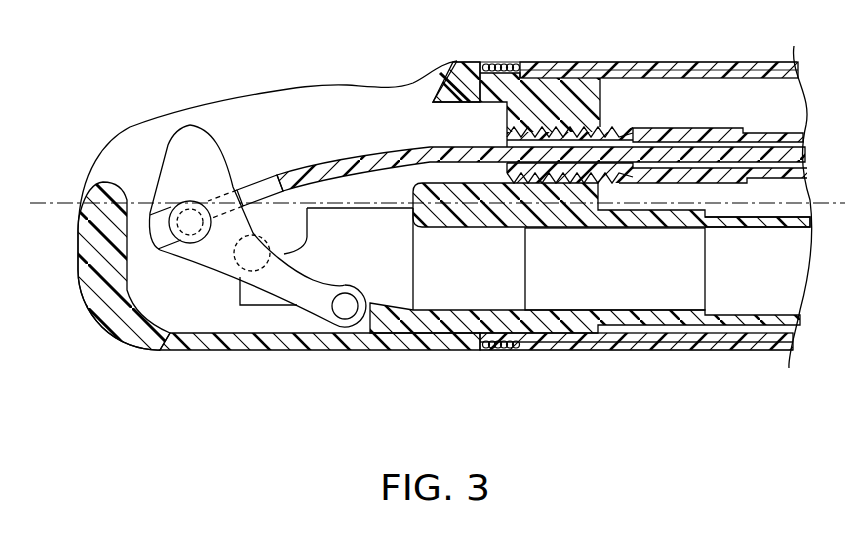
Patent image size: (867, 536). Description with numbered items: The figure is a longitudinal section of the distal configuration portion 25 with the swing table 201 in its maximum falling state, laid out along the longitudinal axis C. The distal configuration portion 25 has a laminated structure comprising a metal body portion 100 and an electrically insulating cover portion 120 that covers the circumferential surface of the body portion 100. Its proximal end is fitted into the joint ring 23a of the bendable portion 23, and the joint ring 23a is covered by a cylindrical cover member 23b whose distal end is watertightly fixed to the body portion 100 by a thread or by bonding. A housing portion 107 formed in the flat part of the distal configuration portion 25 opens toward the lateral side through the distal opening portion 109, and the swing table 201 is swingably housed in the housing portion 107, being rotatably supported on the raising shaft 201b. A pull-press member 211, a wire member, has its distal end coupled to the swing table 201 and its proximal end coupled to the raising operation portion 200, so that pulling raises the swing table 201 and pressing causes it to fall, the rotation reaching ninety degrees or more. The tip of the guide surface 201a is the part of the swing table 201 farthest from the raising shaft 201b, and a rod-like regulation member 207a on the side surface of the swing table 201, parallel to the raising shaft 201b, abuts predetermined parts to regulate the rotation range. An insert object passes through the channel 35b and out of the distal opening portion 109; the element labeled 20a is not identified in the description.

The longitudinal axis C is at (49, 203).
The distal configuration portion 25 is at (92, 343).
The distal opening portion 109 is at (312, 86).
The housing portion 107 is at (388, 93).
The pull-press member 211 is at (552, 150).
The raising operation portion 200 is at (192, 137).
The swing table 201 is at (190, 222).
The guide surface 201a is at (303, 305).
The raising shaft 201b is at (345, 310).
The regulation member 207a is at (242, 267).
The cover portion 120 is at (401, 341).
The body portion 100 is at (441, 320).
The inner tube 20a is at (738, 220).
The channel 35b is at (783, 221).
The bendable portion 23 is at (627, 252).
The joint ring 23a is at (677, 340).
The cover member 23b is at (713, 343).